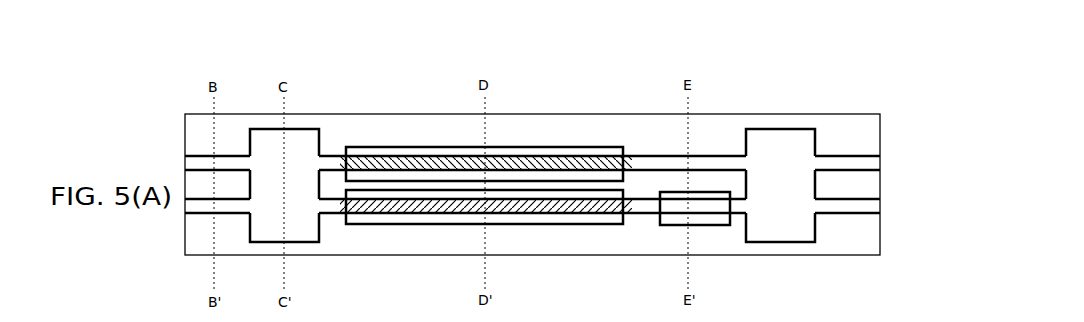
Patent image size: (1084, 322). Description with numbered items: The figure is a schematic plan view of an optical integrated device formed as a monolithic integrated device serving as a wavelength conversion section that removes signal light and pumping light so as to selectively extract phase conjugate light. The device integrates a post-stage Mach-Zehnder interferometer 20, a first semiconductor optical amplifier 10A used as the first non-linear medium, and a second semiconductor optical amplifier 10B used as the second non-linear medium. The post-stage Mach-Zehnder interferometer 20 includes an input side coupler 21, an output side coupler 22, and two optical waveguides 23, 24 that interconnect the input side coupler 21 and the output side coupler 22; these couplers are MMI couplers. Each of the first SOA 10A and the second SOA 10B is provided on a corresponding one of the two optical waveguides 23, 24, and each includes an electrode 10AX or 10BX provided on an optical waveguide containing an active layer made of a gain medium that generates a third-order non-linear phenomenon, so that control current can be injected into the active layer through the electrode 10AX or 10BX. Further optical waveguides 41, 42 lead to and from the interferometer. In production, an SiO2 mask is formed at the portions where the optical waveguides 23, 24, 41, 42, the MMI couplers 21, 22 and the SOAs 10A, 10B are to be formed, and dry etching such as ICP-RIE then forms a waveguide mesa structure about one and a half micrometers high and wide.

The post-stage Mach-Zehnder interferometer 20 is at (648, 106).
The input side coupler 21 is at (263, 138).
The output side coupler 22 is at (772, 140).
The optical waveguide 23 is at (700, 167).
The optical waveguide 24 is at (647, 208).
The optical waveguide 41 is at (197, 160).
The optical waveguide 42 is at (842, 207).
The first semiconductor optical amplifier 10A is at (449, 114).
The second semiconductor optical amplifier 10B is at (487, 175).
The electrode 10AX is at (441, 158).
The electrode 10BX is at (391, 214).